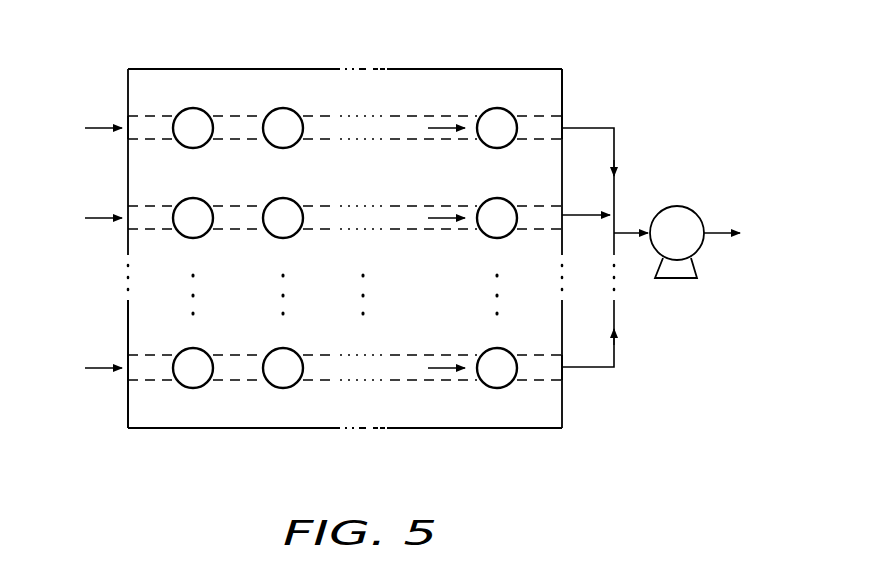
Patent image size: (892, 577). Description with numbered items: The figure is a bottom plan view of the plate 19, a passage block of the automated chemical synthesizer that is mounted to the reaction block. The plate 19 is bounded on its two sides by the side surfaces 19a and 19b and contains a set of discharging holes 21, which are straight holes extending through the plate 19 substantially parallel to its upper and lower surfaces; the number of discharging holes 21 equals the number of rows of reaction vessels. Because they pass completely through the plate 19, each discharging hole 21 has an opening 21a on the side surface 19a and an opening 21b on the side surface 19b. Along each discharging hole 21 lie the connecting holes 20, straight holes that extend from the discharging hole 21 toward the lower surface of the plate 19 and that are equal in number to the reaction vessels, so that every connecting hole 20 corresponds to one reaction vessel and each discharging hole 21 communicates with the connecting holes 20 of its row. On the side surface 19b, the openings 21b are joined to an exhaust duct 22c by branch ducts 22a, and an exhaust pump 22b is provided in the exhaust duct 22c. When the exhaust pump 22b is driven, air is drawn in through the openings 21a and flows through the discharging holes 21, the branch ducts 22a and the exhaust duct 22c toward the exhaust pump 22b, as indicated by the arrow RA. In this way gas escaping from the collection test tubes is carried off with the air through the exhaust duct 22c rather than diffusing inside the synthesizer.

The plate 19 is at (495, 78).
The side surface 19a is at (128, 408).
The side surface 19b is at (562, 78).
The connecting holes 20 is at (192, 108).
The discharging holes 21 is at (238, 232).
The openings 21a is at (125, 134).
The openings 21b is at (565, 118).
The branch ducts 22a is at (614, 153).
The exhaust pump 22b is at (688, 212).
The exhaust duct 22c is at (710, 235).
The arrow RA is at (102, 126).